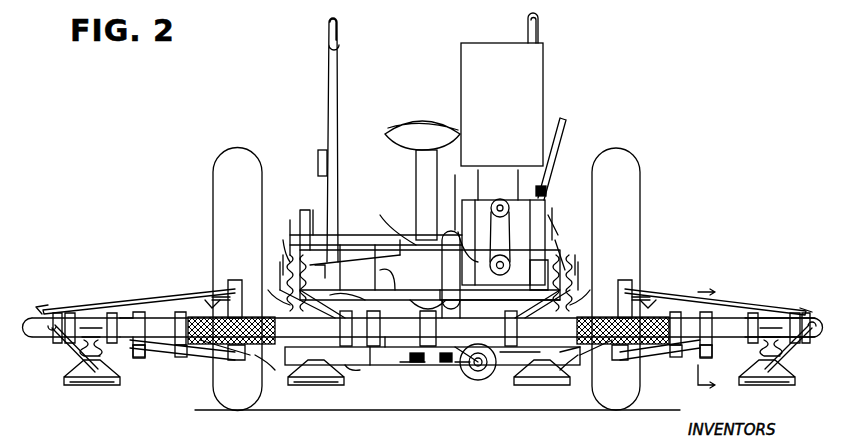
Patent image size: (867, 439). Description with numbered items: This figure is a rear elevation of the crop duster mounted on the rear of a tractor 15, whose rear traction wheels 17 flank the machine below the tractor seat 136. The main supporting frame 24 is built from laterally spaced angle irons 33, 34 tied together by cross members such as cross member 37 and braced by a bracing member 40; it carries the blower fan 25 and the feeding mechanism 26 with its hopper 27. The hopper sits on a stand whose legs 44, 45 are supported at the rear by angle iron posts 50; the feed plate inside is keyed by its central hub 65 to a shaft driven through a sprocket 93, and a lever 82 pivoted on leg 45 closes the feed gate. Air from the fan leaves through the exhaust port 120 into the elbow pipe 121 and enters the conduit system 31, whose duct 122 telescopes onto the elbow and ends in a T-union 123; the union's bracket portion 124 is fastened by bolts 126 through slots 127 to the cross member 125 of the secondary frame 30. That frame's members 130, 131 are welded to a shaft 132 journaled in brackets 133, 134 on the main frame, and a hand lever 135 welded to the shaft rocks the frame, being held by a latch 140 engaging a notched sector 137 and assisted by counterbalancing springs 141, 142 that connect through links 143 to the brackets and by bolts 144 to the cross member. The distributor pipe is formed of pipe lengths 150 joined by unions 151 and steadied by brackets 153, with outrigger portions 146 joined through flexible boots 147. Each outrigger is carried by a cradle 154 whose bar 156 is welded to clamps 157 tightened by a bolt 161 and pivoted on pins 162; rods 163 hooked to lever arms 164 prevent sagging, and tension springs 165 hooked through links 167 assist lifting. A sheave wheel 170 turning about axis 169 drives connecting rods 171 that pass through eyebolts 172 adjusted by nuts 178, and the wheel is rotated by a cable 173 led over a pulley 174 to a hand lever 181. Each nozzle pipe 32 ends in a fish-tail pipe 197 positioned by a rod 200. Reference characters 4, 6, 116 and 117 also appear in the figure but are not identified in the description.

The bracket 4 is at (538, 275).
The section line 6 is at (705, 340).
The tractor 15 is at (380, 241).
The rear traction wheels 17 is at (230, 192).
The main supporting frame 24 is at (340, 244).
The blower fan 25 is at (452, 186).
The feeding mechanism 26 is at (548, 189).
The hopper 27 is at (489, 120).
The second supporting frame 30 is at (370, 369).
The conduit system 31 is at (385, 351).
The nozzle pipes 32 is at (77, 394).
The angle iron 33 is at (287, 251).
The angle iron 34 is at (562, 251).
The cross member 37 is at (382, 323).
The bracing member 40 is at (340, 297).
The leg 44 is at (480, 173).
The leg 45 is at (443, 286).
The angle iron posts 50 is at (518, 173).
The central hub 65 is at (312, 293).
The lever 82 is at (556, 146).
The sprocket 93 is at (503, 228).
The link 116 is at (380, 283).
The frame bar 117 is at (350, 263).
The exhaust port 120 is at (410, 229).
The right angle elbow pipe 121 is at (402, 241).
The duct 122 is at (436, 297).
The T-union 123 is at (428, 323).
The flange or bracket portion 124 is at (420, 367).
The angle iron cross member 125 is at (350, 373).
The bolts 126 is at (445, 367).
The transversely extending slots 127 is at (405, 369).
The frame member 130 is at (290, 276).
The frame member 131 is at (572, 276).
The transversely disposed shaft 132 is at (312, 216).
The bracket 133 is at (290, 226).
The bracket 134 is at (558, 219).
The hand lever 135 is at (333, 111).
The tractor seat 136 is at (425, 128).
The notched sector 137 is at (325, 236).
The grip-release latch 140 is at (318, 159).
The counterbalancing spring 141 is at (275, 263).
The counterbalancing spring 142 is at (582, 261).
The links 143 is at (270, 246).
The bolts 144 is at (262, 366).
The outrigger portions 146 is at (48, 303).
The flexible boots 147 is at (425, 320).
The short lengths of pipe 150 is at (100, 357).
The unions 151 is at (100, 318).
The brackets 153 is at (340, 329).
The cradle 154 is at (138, 318).
The bar 156 is at (200, 356).
The clamps 157 is at (178, 312).
The bolt 161 is at (175, 358).
The pivot pins 162 is at (222, 361).
The rods 163 is at (105, 300).
The upright lever arm 164 is at (228, 291).
The counterbalancing tension springs 165 is at (528, 307).
The links 167 is at (265, 291).
The fore and aft extending axis 169 is at (486, 381).
The sheave wheel 170 is at (473, 376).
The connecting rods 171 is at (235, 361).
The eyebolts 172 is at (214, 297).
The cable 173 is at (500, 371).
The pulley 174 is at (560, 371).
The nuts 178 is at (208, 301).
The hand lever 181 is at (540, 33).
The fish-tail pipe 197 is at (92, 383).
The rod 200 is at (75, 351).